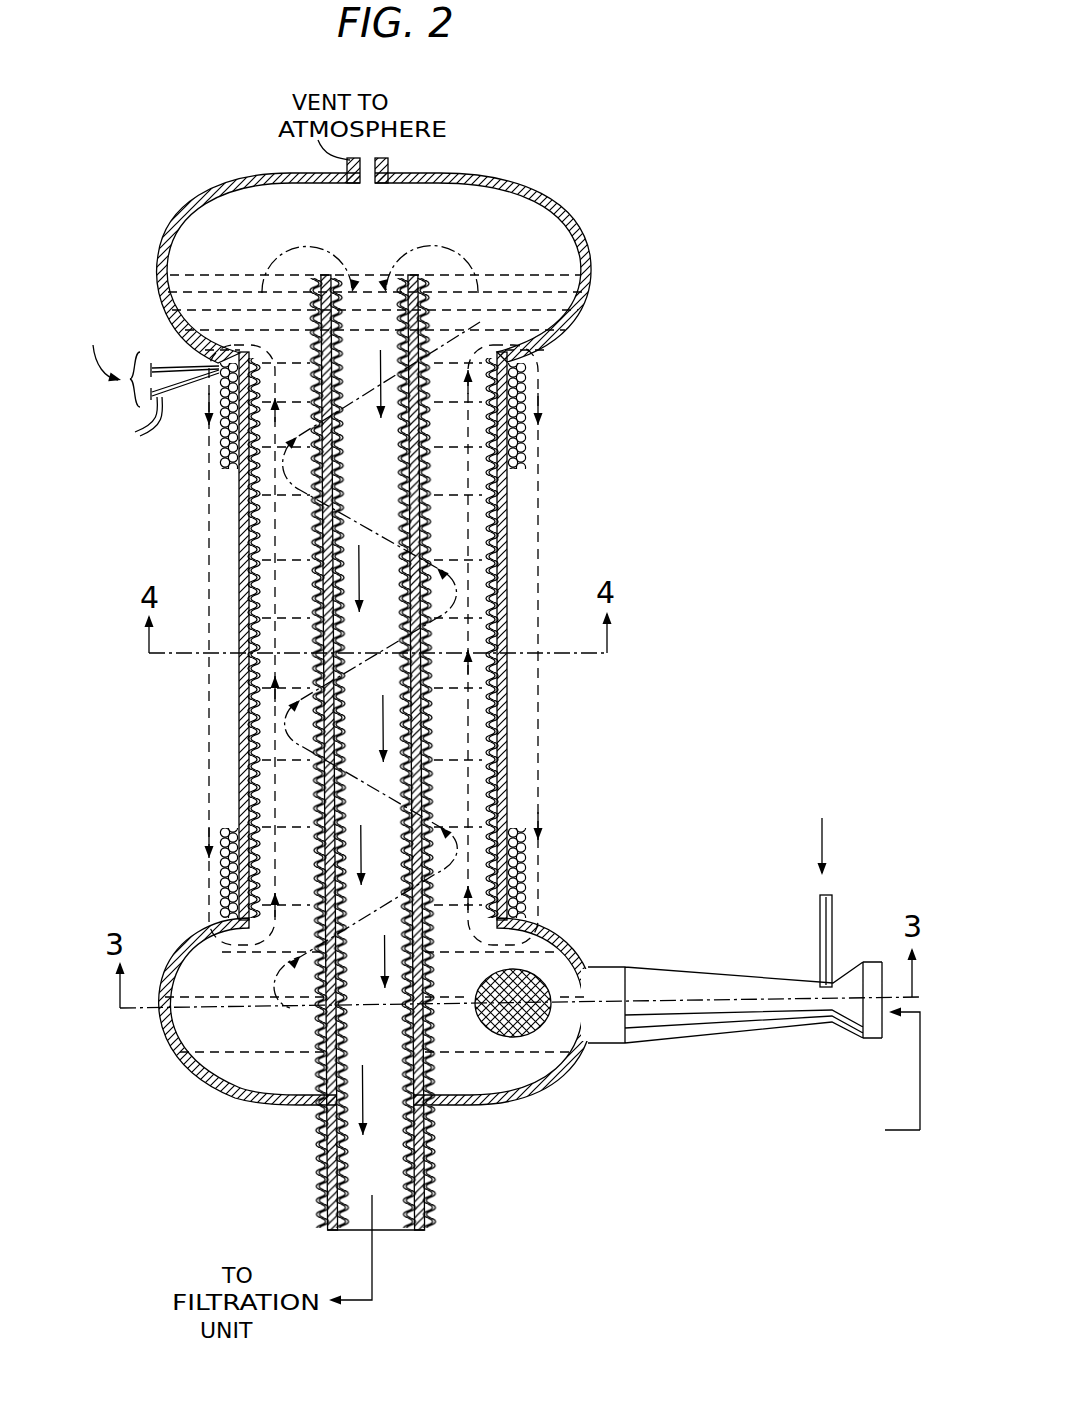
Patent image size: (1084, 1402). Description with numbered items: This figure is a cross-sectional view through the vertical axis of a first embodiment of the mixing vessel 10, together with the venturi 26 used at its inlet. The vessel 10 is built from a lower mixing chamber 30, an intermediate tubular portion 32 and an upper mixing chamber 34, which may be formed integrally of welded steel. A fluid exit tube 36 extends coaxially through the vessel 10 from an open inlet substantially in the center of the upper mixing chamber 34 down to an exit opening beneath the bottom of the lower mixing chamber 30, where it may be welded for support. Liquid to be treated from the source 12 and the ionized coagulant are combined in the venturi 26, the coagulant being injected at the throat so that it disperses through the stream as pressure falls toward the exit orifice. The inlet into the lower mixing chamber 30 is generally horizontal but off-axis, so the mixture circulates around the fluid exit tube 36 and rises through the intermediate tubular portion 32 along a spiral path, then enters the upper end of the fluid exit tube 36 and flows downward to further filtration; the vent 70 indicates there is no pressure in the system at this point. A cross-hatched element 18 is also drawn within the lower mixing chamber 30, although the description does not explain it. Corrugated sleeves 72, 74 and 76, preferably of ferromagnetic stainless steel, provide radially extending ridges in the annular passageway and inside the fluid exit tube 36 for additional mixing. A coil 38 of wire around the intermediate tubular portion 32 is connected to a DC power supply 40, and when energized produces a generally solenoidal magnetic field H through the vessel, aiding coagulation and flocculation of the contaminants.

The mixing vessel 10 is at (165, 747).
The source 12 is at (918, 1070).
The ball 18 is at (527, 1022).
The venturi 26 is at (710, 965).
The lower mixing chamber 30 is at (215, 1092).
The intermediate tubular portion 32 is at (240, 521).
The upper mixing chamber 34 is at (588, 293).
The fluid exit tube 36 is at (452, 752).
The coil 38 is at (527, 397).
The DC power supply 40 is at (134, 361).
The vent 70 is at (388, 167).
The corrugated sleeve 72 is at (428, 740).
The corrugated sleeve 74 is at (487, 712).
The corrugated sleeve 76 is at (419, 1160).
The magnetic field H is at (208, 465).